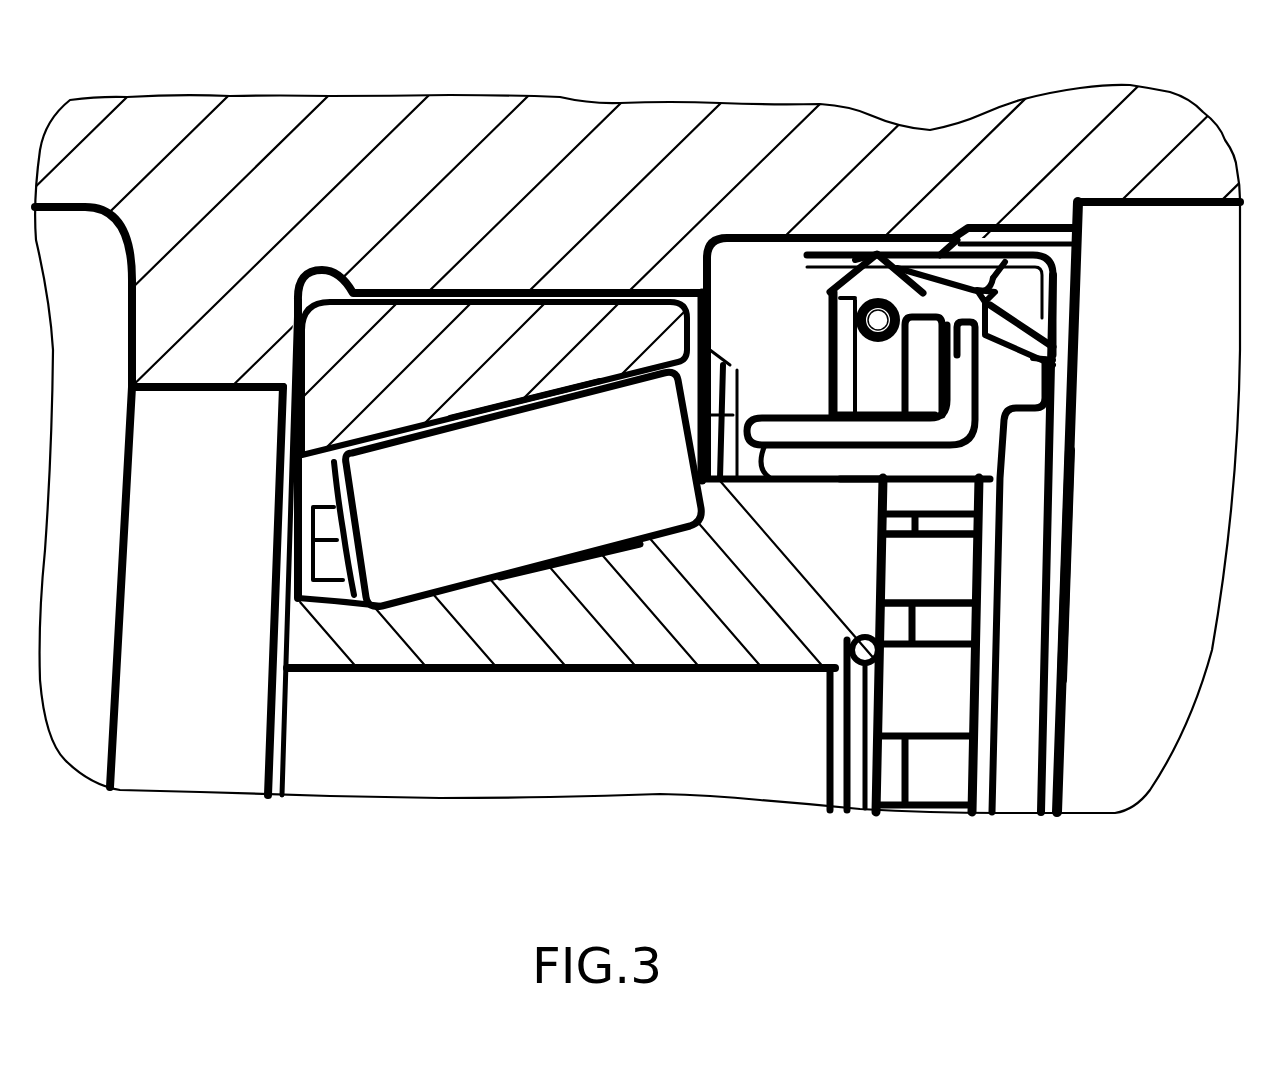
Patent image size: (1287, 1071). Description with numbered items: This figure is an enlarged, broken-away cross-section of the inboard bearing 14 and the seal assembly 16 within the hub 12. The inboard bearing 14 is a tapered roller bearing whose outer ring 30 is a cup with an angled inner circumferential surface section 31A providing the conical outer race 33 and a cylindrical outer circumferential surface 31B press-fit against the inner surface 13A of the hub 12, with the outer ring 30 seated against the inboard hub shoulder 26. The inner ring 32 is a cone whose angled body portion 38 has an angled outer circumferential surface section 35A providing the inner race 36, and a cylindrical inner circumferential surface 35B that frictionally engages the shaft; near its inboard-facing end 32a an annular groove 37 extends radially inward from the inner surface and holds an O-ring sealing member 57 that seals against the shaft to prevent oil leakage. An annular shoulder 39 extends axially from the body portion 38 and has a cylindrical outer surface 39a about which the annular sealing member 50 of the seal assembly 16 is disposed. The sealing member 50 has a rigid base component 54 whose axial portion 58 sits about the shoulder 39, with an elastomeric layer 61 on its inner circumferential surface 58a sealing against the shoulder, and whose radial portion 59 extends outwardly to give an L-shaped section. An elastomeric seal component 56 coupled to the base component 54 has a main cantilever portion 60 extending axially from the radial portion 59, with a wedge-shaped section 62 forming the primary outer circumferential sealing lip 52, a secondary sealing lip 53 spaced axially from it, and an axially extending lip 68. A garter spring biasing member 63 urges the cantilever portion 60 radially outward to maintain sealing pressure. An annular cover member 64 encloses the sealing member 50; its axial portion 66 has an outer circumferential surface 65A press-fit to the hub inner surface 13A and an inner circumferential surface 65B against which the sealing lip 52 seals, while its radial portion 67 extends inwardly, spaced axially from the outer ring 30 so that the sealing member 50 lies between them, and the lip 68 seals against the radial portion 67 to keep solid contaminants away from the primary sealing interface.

The hub 12 is at (1178, 117).
The inner surface of the hub 13A is at (1186, 215).
The inboard bearing 14 is at (515, 742).
The seal assembly 16 is at (1112, 394).
The inboard hub shoulder 26 is at (157, 343).
The outer ring 30 is at (445, 278).
The angled inner circumferential surface section 31A is at (480, 418).
The cylindrical outer circumferential surface 31B is at (517, 290).
The inner ring 32 is at (369, 680).
The inboard-facing end 32a is at (900, 610).
The outer race 33 is at (558, 405).
The angled outer circumferential surface section 35A is at (598, 545).
The cylindrical inner circumferential surface 35B is at (566, 677).
The inner race 36 is at (488, 558).
The annular groove 37 is at (893, 672).
The angled body portion 38 is at (456, 645).
The annular shoulder 39 is at (783, 635).
The cylindrical outer surface 39a is at (733, 493).
The annular sealing member 50 is at (823, 333).
The outer circumferential sealing lip 52 is at (890, 238).
The secondary outer circumferential sealing lip 53 is at (1080, 265).
The rigid base component 54 is at (857, 465).
The elastomeric seal component 56 is at (826, 300).
The annular sealing member 57 is at (830, 728).
The axial portion 58 is at (818, 460).
The inner circumferential surface 58a is at (780, 495).
The radial portion 59 is at (1077, 423).
The main cantilever portion 60 is at (932, 250).
The elastomeric layer 61 is at (921, 490).
The wedge-shaped section 62 is at (868, 285).
The annular biasing member 63 is at (870, 373).
The annular cover member 64 is at (1085, 323).
The outer circumferential surface 65A is at (895, 235).
The inner circumferential surface 65B is at (838, 232).
The axial portion 66 is at (1007, 228).
The radial portion 67 is at (1060, 300).
The axially extending lip 68 is at (1062, 350).